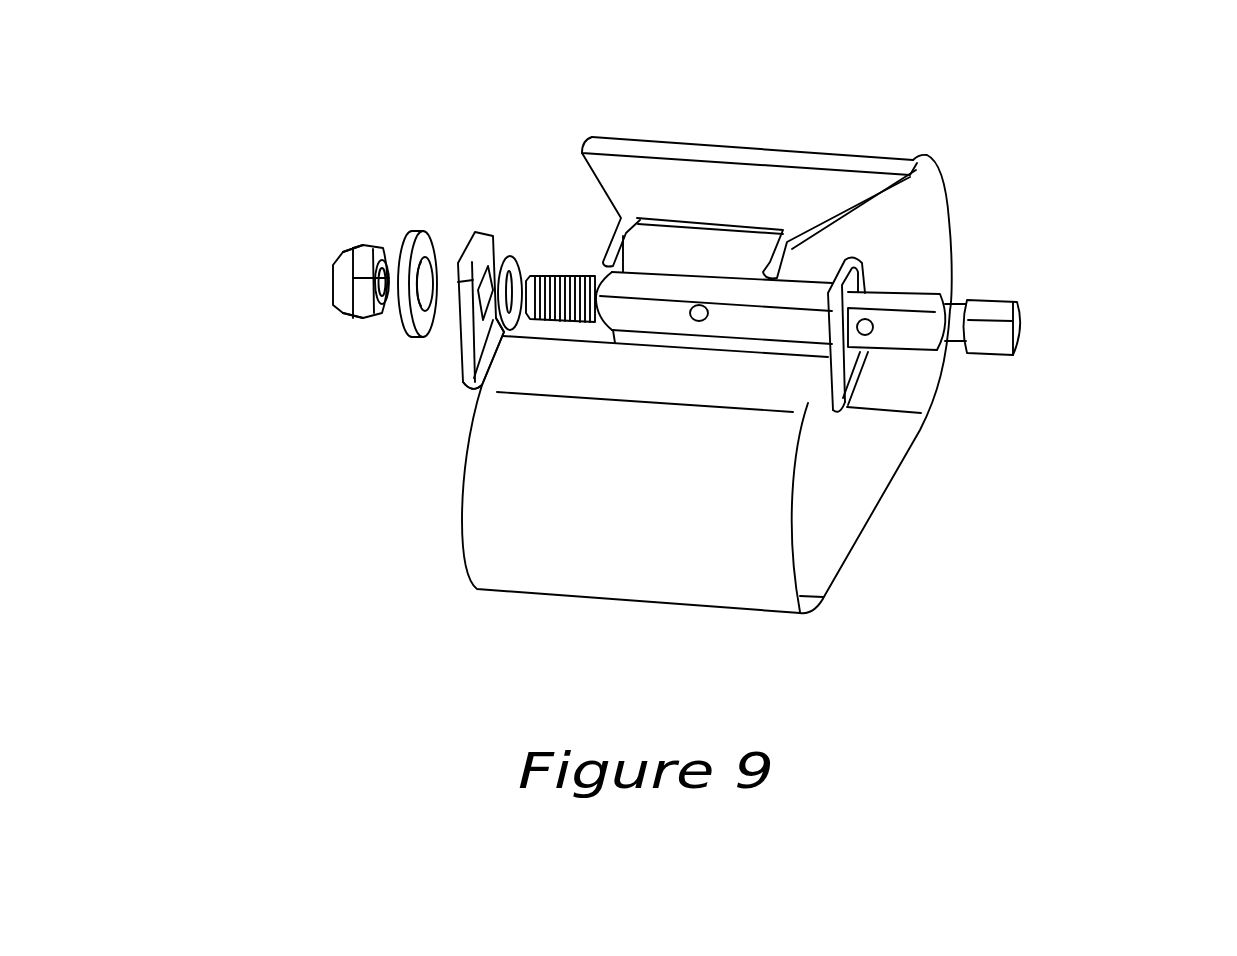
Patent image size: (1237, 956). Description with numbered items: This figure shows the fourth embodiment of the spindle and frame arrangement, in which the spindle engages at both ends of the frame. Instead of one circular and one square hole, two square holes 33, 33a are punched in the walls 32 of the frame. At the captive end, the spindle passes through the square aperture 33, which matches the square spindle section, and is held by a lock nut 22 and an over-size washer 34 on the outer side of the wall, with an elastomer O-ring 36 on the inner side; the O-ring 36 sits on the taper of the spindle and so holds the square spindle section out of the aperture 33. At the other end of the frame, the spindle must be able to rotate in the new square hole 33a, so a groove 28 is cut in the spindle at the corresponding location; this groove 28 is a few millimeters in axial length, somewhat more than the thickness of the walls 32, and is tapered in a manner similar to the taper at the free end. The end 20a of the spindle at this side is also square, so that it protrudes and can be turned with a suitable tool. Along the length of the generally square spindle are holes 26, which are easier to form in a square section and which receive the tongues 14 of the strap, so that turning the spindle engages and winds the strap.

The tongues 14 is at (613, 247).
The end of the spindle 20a is at (1020, 300).
The lock nut 22 is at (332, 280).
The holes 26 is at (697, 321).
The groove 28 is at (953, 332).
The walls 32 is at (465, 387).
The aperture 33 is at (463, 258).
The square hole 33a is at (860, 288).
The over-size washer 34 is at (413, 343).
The elastomer O-ring 36 is at (512, 258).